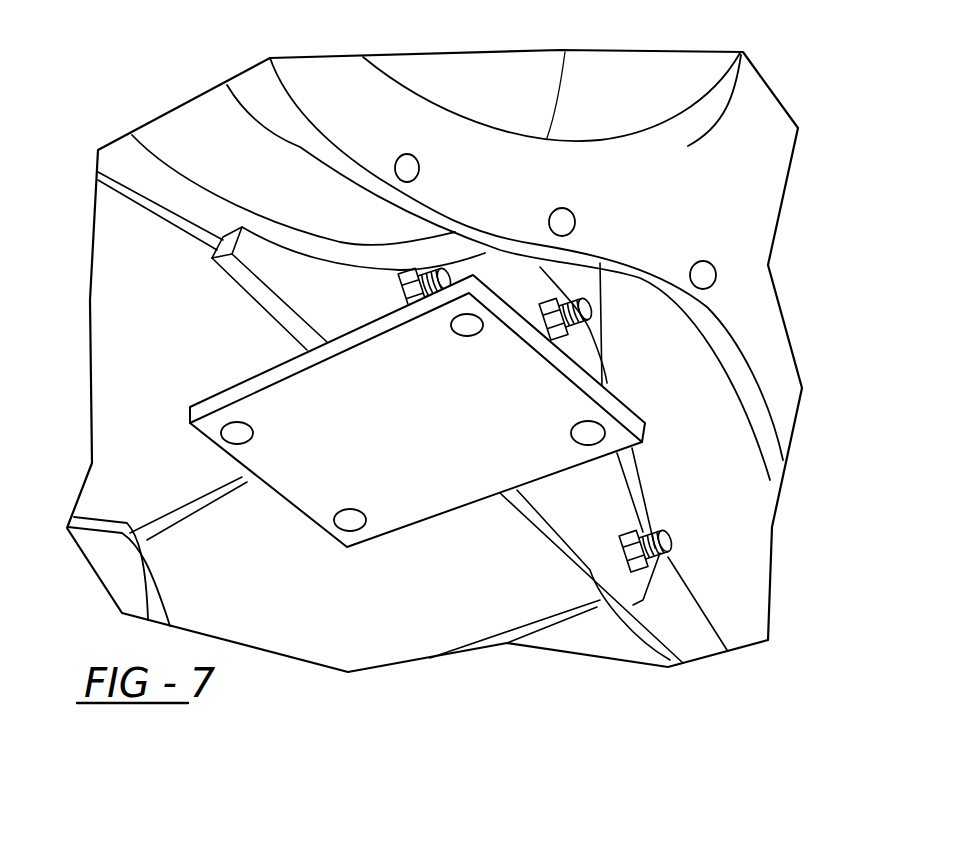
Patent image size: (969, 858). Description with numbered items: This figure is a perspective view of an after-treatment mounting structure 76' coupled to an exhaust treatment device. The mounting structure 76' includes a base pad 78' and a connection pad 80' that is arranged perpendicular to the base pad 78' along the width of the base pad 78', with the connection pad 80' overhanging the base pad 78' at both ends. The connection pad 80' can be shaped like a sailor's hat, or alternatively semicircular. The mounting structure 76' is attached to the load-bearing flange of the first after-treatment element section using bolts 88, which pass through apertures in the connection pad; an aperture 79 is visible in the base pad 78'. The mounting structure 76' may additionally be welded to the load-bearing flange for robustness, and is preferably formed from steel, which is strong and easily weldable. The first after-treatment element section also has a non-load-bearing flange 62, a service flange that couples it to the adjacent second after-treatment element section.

The non-load-bearing flange 62 is at (748, 90).
The mounting structure 76' is at (379, 439).
The base pad 78' is at (417, 411).
The plate hole 79 is at (222, 434).
The connection pad 80' is at (680, 549).
The bolts 88 is at (670, 557).